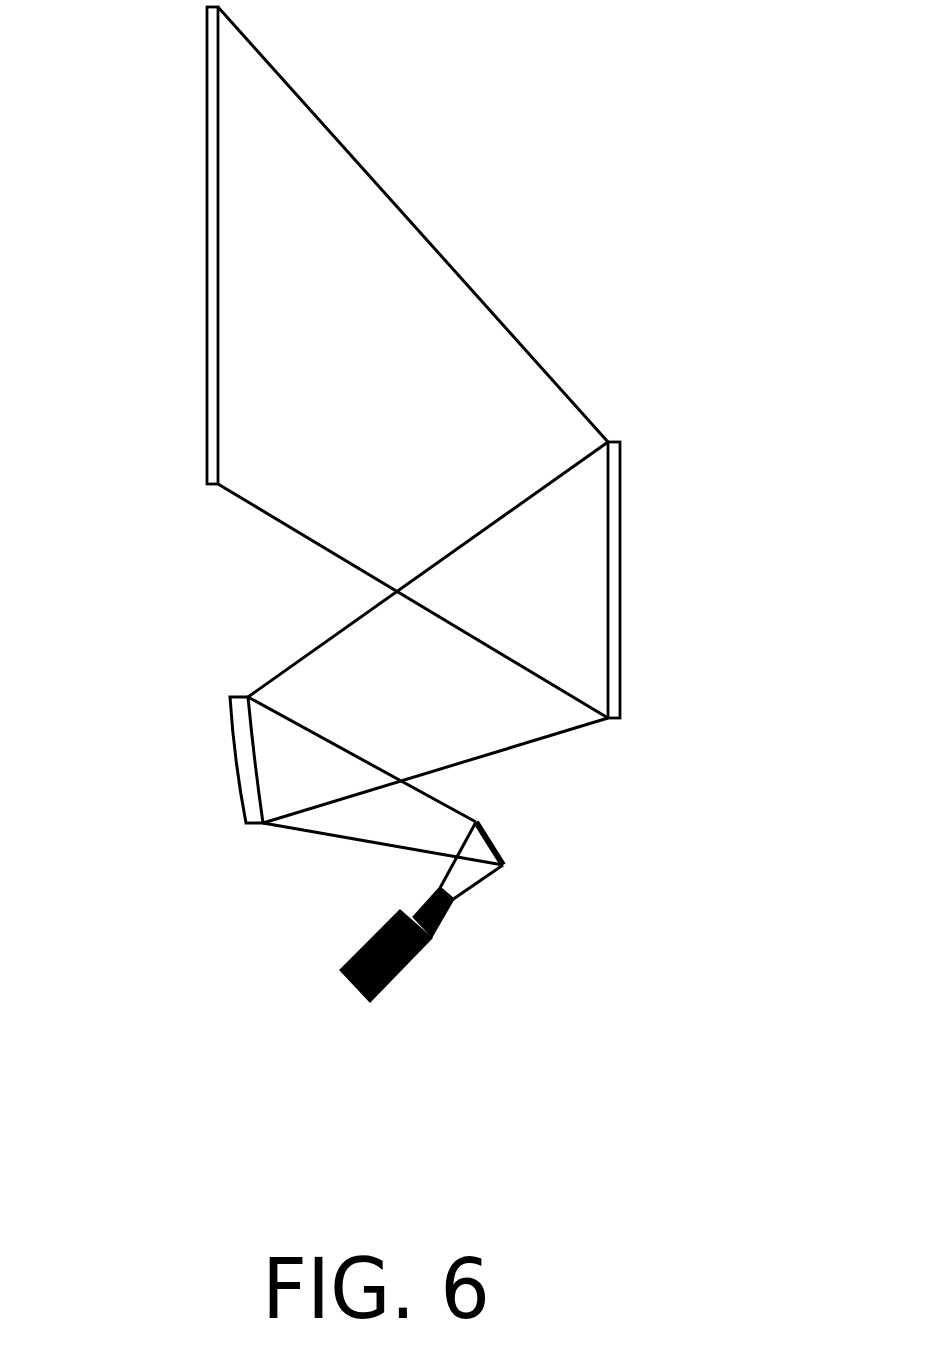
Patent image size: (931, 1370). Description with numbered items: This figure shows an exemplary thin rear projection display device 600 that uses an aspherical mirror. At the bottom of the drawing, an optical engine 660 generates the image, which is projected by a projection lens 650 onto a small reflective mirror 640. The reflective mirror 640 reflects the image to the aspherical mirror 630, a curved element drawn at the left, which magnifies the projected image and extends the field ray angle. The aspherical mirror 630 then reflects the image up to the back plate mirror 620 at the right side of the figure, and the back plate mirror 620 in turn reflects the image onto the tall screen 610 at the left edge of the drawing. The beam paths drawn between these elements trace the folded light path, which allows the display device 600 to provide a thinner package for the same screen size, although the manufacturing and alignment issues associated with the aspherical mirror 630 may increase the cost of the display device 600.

The rear projection display device 600 is at (646, 78).
The screen 610 is at (191, 112).
The back plate mirror 620 is at (636, 434).
The aspherical mirror 630 is at (220, 768).
The reflective mirror 640 is at (517, 832).
The projection lens 650 is at (392, 890).
The optical engine 660 is at (342, 995).